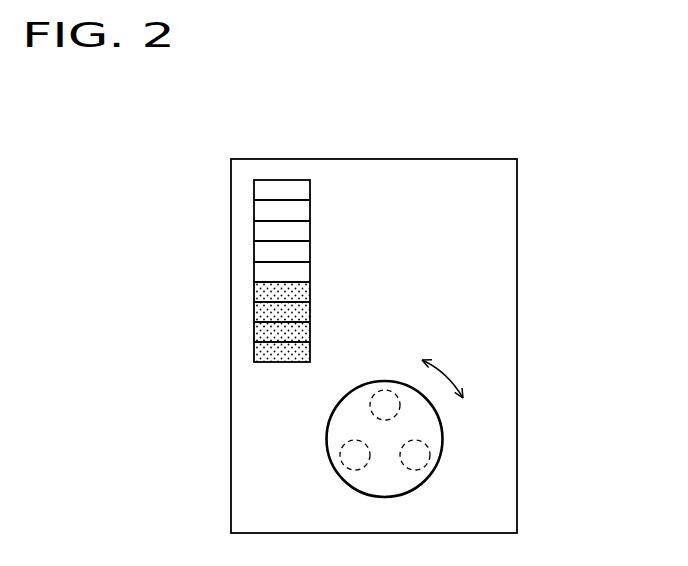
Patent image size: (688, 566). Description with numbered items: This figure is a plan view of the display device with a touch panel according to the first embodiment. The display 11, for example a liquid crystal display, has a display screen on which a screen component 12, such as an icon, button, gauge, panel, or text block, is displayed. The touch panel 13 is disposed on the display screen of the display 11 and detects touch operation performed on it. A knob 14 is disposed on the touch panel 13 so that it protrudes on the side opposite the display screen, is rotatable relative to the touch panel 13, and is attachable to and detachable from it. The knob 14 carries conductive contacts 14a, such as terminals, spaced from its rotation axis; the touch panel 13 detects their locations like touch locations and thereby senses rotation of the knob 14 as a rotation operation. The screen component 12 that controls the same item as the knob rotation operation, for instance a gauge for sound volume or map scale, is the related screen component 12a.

The display 11 is at (420, 346).
The touch panel 13 is at (518, 355).
The screen component 12 is at (302, 233).
The related screen component 12a is at (287, 180).
The knob 14 is at (393, 381).
The conductive contacts 14a is at (429, 459).